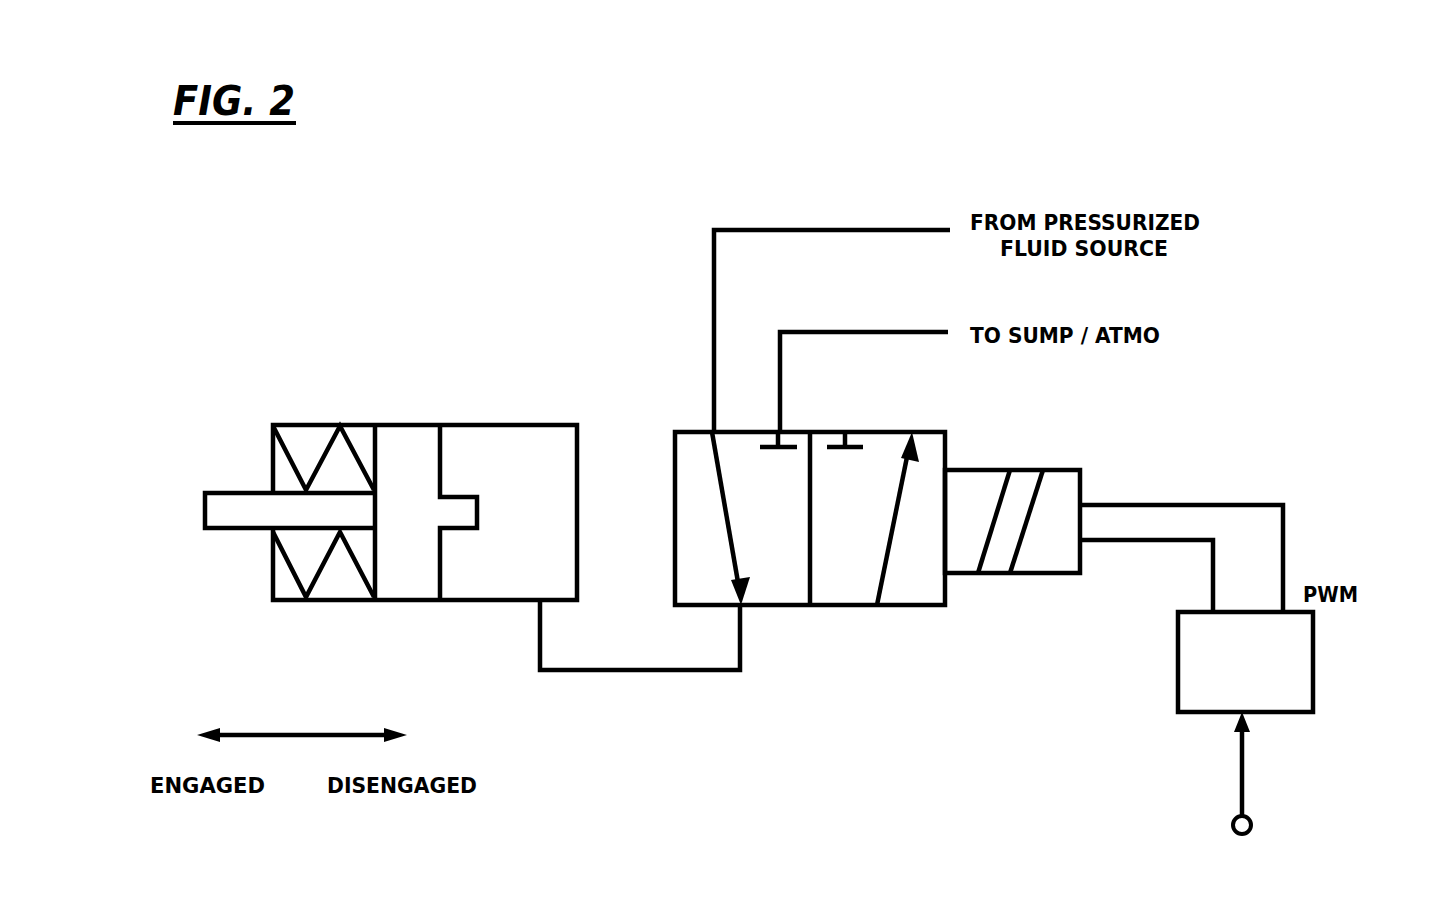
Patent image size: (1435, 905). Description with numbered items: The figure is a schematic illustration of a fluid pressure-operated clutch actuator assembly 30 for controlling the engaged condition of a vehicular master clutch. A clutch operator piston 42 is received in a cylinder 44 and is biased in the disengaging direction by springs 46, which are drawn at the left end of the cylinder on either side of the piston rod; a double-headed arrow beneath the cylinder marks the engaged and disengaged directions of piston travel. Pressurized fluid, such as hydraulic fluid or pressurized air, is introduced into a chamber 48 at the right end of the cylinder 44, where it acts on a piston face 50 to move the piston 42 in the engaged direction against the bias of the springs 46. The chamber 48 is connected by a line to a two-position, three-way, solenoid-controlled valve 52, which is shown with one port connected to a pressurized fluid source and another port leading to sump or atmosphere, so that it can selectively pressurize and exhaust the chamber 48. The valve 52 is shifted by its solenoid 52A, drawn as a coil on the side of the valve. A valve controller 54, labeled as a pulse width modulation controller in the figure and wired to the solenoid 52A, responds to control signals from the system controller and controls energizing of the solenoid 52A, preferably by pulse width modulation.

The clutch actuator assembly 30 is at (1292, 219).
The clutch operator piston 42 is at (408, 497).
The cylinder 44 is at (511, 426).
The springs 46 is at (307, 458).
The chamber 48 is at (542, 497).
The piston face 50 is at (442, 568).
The solenoid-controlled valve 52 is at (808, 648).
The solenoid 52A is at (978, 503).
The valve controller 54 is at (1278, 680).